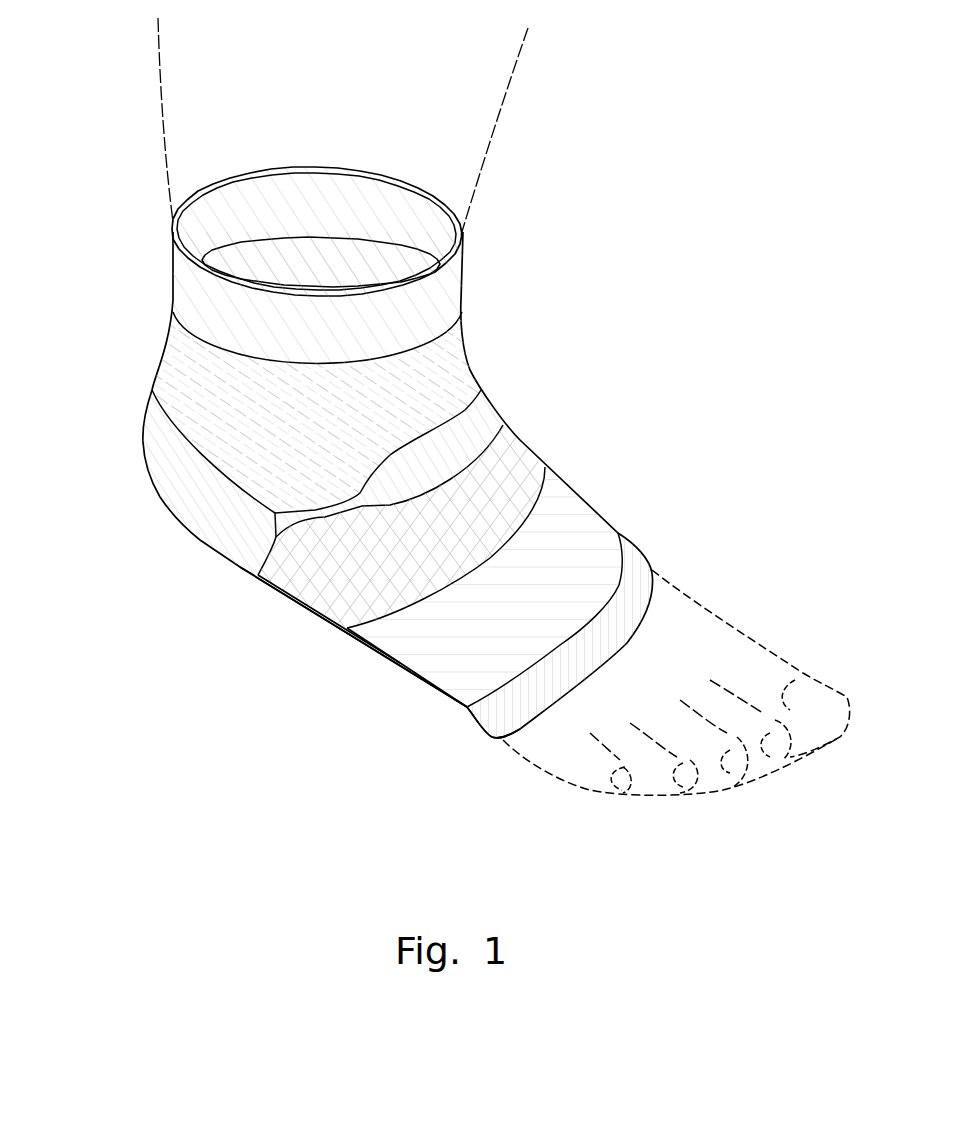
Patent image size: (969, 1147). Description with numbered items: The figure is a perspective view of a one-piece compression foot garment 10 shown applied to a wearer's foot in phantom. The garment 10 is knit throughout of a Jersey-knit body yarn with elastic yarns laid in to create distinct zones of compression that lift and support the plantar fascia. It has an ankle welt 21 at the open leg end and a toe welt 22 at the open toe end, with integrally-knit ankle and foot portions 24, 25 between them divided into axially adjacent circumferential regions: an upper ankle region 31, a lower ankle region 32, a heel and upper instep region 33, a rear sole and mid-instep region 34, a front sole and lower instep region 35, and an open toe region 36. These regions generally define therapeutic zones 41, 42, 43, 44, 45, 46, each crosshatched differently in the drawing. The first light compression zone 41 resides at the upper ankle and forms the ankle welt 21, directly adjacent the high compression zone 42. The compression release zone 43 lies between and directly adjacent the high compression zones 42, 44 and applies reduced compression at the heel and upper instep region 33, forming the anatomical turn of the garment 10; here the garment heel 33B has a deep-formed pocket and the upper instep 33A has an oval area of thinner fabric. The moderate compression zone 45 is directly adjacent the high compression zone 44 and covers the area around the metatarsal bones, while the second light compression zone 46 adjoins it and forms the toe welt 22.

The compression foot garment 10 is at (116, 273).
The ankle welt 21 is at (255, 162).
The toe welt 22 is at (648, 628).
The ankle portion 24 is at (495, 297).
The foot portion 25 is at (366, 670).
The upper ankle region 31 is at (185, 283).
The lower ankle region 32 is at (348, 350).
The heel and upper instep region 33 is at (175, 506).
The upper instep 33A is at (481, 413).
The garment heel 33B is at (220, 513).
The rear sole and mid-instep region 34 is at (290, 588).
The front sole and lower instep region 35 is at (587, 538).
The open toe region 36 is at (633, 560).
The first light compression zone 41 is at (287, 175).
The high compression zone 42 is at (435, 373).
The compression release zone 43 is at (247, 553).
The high compression zone 44 is at (513, 460).
The moderate compression zone 45 is at (473, 670).
The second light compression zone 46 is at (500, 718).